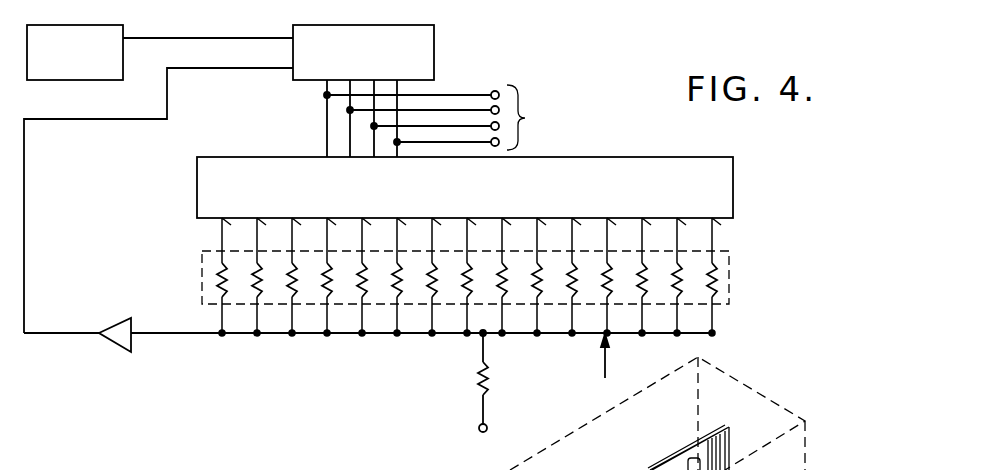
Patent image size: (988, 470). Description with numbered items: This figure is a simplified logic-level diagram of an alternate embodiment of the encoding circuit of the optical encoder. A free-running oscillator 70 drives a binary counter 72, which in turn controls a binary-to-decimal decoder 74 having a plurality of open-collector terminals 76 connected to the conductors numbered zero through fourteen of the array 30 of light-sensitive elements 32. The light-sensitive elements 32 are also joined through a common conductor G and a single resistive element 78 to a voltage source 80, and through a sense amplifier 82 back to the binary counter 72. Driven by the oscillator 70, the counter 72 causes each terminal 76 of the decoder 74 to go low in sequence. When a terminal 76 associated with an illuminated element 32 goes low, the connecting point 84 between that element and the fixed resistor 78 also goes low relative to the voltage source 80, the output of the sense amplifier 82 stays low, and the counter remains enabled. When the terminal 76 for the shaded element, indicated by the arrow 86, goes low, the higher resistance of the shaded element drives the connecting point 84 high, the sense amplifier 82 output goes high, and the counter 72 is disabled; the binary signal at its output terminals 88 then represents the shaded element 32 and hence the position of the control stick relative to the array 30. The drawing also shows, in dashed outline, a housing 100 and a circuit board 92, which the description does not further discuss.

The free-running oscillator 70 is at (108, 25).
The binary counter 72 is at (430, 25).
The binary-to-decimal decoder 74 is at (733, 199).
The open-collector terminals 76 is at (222, 251).
The array of light-sensitive elements 30 is at (729, 274).
The light-sensitive element 32 is at (217, 273).
The sense amplifier 82 is at (112, 342).
The connecting point 84 is at (478, 338).
The resistive element 78 is at (489, 385).
The voltage source 80 is at (488, 428).
The arrow 86 is at (607, 368).
The output terminals 88 is at (526, 118).
The keyboard housing 100 is at (755, 391).
The printed circuit board 92 is at (633, 469).